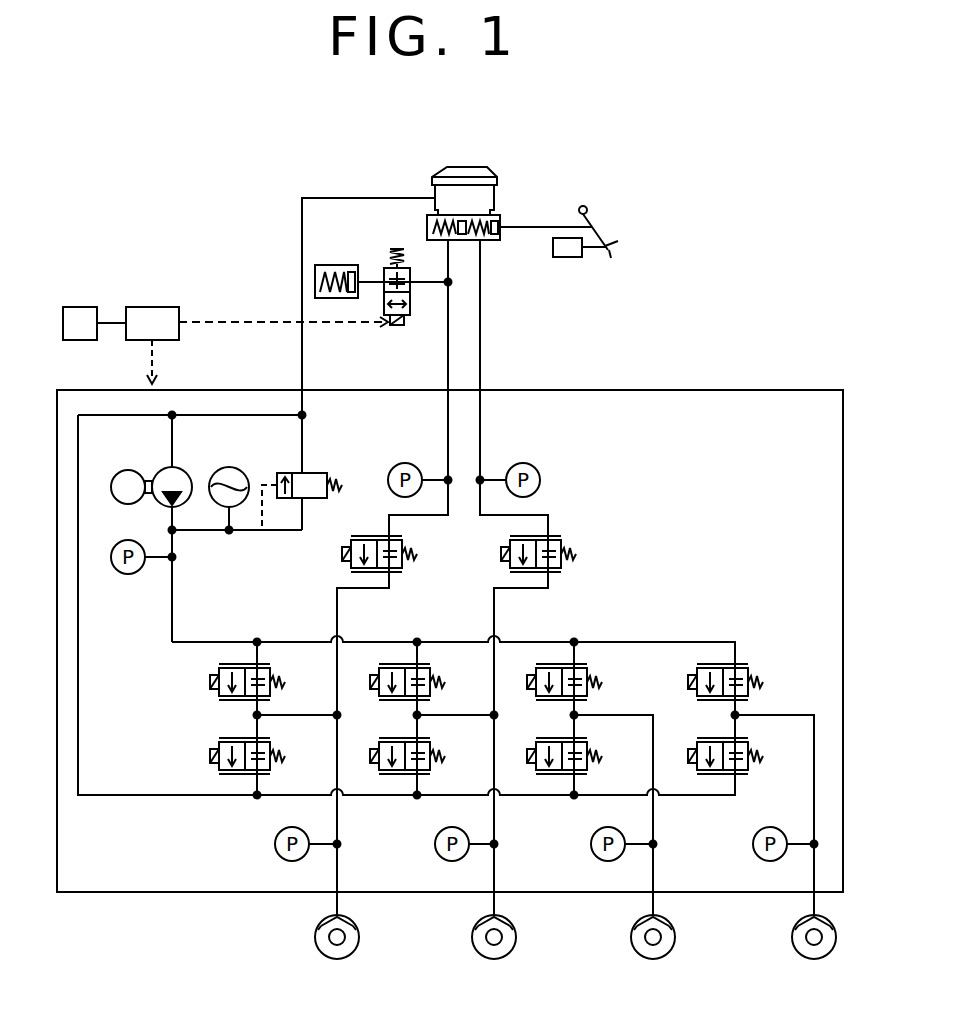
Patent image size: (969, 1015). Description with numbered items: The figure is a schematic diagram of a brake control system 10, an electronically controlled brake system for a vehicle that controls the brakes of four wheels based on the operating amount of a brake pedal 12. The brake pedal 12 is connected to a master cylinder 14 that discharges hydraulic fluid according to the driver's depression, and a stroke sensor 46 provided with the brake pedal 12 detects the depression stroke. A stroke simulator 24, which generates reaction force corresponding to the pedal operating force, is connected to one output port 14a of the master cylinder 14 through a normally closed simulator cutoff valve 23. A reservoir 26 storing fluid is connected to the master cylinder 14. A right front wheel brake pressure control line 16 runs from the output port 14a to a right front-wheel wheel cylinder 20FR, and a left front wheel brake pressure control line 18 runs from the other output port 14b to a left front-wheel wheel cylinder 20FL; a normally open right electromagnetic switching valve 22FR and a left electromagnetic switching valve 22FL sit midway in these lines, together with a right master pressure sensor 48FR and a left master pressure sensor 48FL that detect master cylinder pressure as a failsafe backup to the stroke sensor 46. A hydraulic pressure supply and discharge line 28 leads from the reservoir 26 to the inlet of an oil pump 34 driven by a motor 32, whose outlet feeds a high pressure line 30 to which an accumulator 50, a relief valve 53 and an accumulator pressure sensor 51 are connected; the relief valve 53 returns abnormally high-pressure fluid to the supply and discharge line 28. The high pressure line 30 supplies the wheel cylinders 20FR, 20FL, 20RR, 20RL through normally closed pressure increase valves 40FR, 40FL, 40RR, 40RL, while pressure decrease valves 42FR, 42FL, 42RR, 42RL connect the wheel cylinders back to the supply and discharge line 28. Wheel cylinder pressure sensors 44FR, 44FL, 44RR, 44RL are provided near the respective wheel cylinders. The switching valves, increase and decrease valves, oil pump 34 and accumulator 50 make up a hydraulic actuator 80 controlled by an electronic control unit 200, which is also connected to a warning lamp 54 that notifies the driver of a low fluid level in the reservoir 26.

The brake control system 10 is at (245, 198).
The brake pedal 12 is at (618, 244).
The master cylinder 14 is at (490, 240).
The output port 14a is at (437, 242).
The output port 14b is at (471, 240).
The right front wheel brake pressure control line 16 is at (418, 518).
The left front wheel brake pressure control line 18 is at (493, 518).
The right front-wheel wheel cylinder 20FR is at (315, 920).
The left front-wheel wheel cylinder 20FL is at (472, 920).
The left rear-wheel wheel cylinder 20RL is at (631, 920).
The right rear-wheel wheel cylinder 20RR is at (792, 920).
The right electromagnetic switching valve 22FR is at (342, 553).
The left electromagnetic switching valve 22FL is at (572, 549).
The simulator cutoff valve 23 is at (398, 319).
The stroke simulator 24 is at (322, 266).
The reservoir 26 is at (478, 167).
The hydraulic pressure supply and discharge line 28 is at (378, 186).
The high pressure line 30 is at (172, 543).
The motor 32 is at (116, 472).
The oil pump 34 is at (180, 468).
The pressure increase valve 40FR is at (210, 683).
The pressure increase valve 40FL is at (372, 666).
The pressure increase valve 40RL is at (529, 666).
The pressure increase valve 40RR is at (688, 666).
The pressure decrease valve 42FR is at (210, 757).
The pressure decrease valve 42FL is at (378, 770).
The pressure decrease valve 42RL is at (535, 770).
The pressure decrease valve 42RR is at (695, 770).
The right front-wheel wheel cylinder pressure sensor 44FR is at (277, 852).
The left front-wheel wheel cylinder pressure sensor 44FL is at (437, 852).
The left rear-wheel wheel cylinder pressure sensor 44RL is at (593, 852).
The right rear-wheel wheel cylinder pressure sensor 44RR is at (755, 852).
The stroke sensor 46 is at (570, 257).
The right master pressure sensor 48FR is at (405, 463).
The left master pressure sensor 48FL is at (540, 446).
The accumulator 50 is at (230, 467).
The accumulator pressure sensor 51 is at (128, 574).
The relief valve 53 is at (312, 473).
The warning lamp 54 is at (80, 307).
The hydraulic actuator 80 is at (690, 390).
The electronic control unit 200 is at (152, 307).